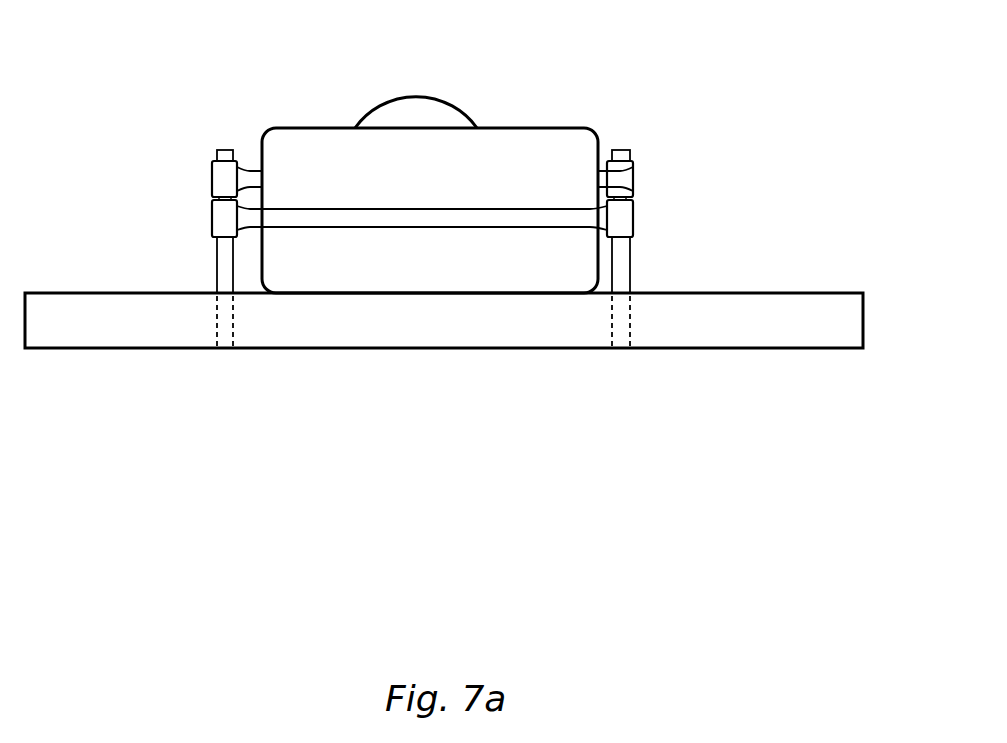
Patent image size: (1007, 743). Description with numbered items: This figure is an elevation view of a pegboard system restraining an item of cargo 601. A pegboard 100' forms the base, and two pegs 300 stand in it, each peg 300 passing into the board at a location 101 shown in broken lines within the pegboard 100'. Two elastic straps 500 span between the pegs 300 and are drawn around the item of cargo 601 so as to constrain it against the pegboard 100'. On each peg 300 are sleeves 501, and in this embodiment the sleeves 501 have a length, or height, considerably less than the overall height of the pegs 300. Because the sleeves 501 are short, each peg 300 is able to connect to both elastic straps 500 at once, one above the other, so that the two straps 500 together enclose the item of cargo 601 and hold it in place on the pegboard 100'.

The pegboard 100' is at (444, 290).
The hole in base plate 101 is at (225, 338).
The peg 300 is at (217, 273).
The elastic strap 500 is at (248, 164).
The sleeve 501 is at (212, 219).
The item of cargo 601 is at (543, 130).